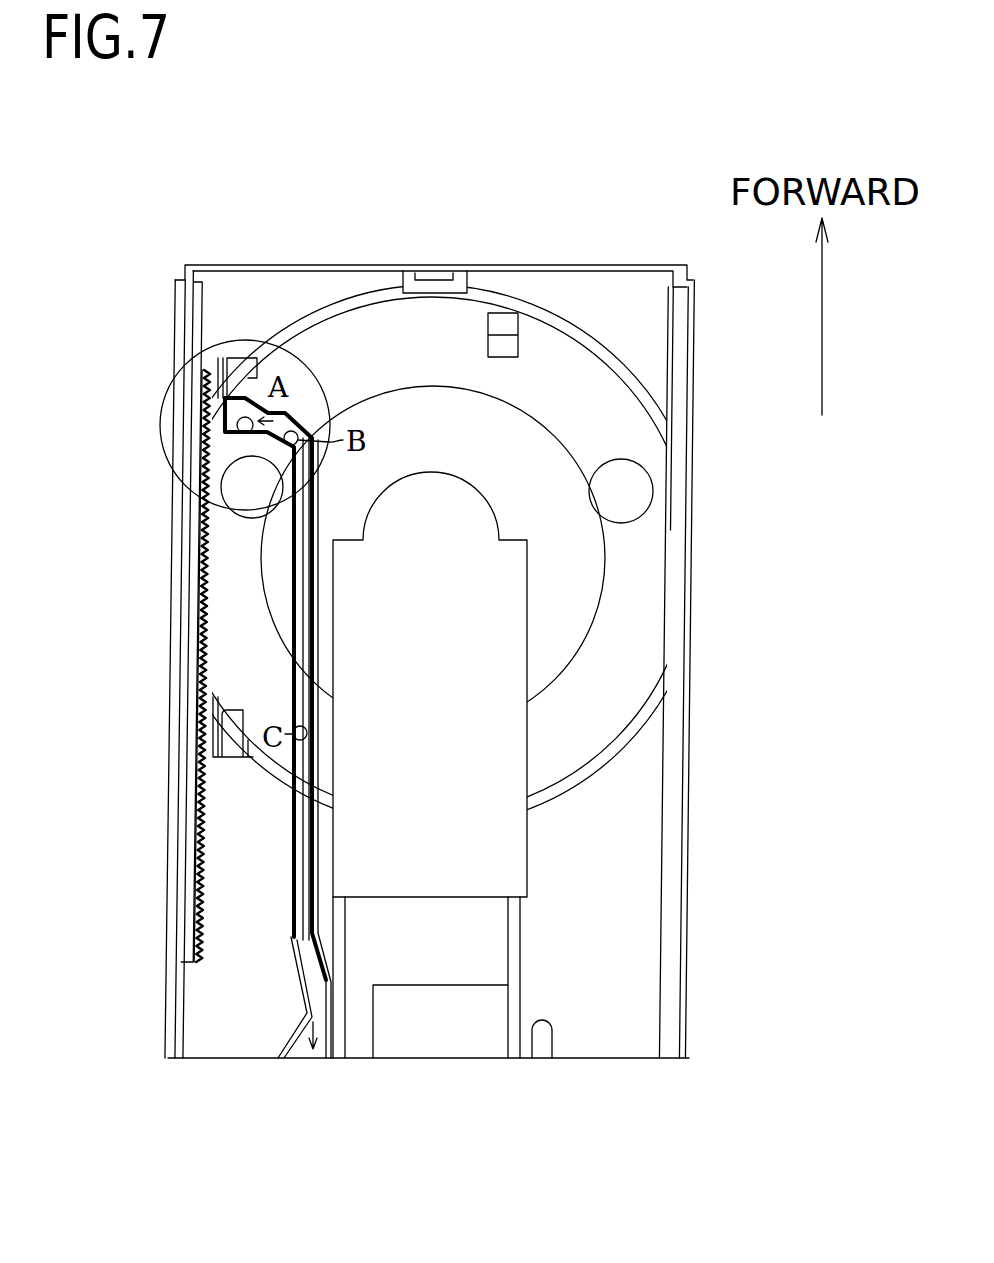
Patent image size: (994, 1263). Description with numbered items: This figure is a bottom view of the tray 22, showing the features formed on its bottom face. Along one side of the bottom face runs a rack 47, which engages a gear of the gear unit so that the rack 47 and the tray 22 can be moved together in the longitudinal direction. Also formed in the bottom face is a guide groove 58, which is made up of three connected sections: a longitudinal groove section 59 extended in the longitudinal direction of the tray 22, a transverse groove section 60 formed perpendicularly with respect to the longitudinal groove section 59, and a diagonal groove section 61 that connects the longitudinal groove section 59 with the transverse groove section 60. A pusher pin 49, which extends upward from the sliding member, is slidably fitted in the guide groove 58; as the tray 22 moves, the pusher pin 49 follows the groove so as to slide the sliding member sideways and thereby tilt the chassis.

The tray 22 is at (640, 878).
The rack 47 is at (200, 842).
The pusher pin 49 is at (240, 445).
The transverse groove section 60 is at (222, 466).
The diagonal groove section 61 is at (300, 418).
The guide groove 58 is at (277, 866).
The longitudinal groove section 59 is at (306, 905).